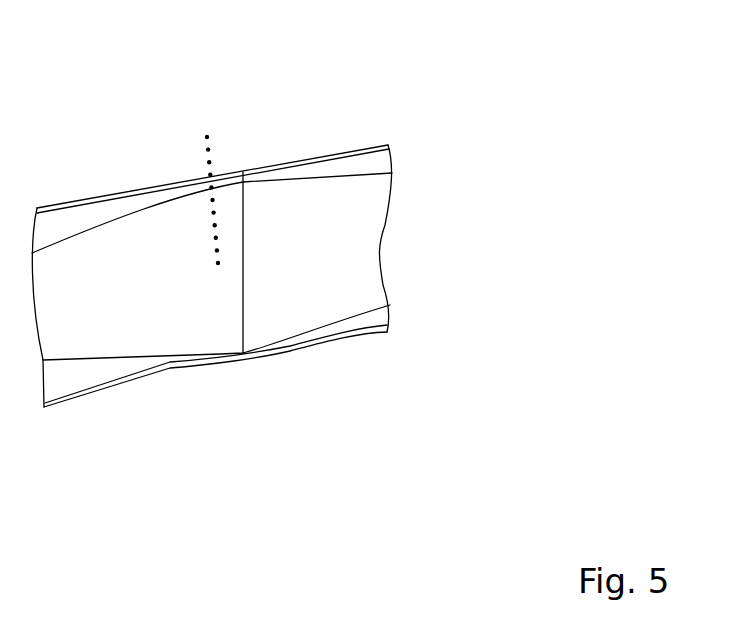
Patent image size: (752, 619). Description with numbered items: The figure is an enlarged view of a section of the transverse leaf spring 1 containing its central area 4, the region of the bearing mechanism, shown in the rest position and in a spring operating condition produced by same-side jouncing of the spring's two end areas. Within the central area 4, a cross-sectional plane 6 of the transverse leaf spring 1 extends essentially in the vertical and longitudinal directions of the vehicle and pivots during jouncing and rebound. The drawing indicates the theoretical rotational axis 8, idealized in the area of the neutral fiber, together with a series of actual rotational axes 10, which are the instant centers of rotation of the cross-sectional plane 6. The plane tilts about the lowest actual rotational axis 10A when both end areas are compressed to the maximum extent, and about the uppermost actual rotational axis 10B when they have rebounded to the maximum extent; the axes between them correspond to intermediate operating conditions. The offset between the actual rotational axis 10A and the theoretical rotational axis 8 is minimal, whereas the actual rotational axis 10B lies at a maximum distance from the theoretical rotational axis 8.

The transverse leaf spring 1 is at (368, 110).
The central area 4 is at (176, 158).
The cross-sectional plane 6 is at (243, 303).
The theoretical rotational axis 8 is at (243, 266).
The actual rotational axes 10 is at (208, 254).
The lowest actual rotational axis 10A is at (218, 265).
The uppermost actual rotational axis 10B is at (205, 130).